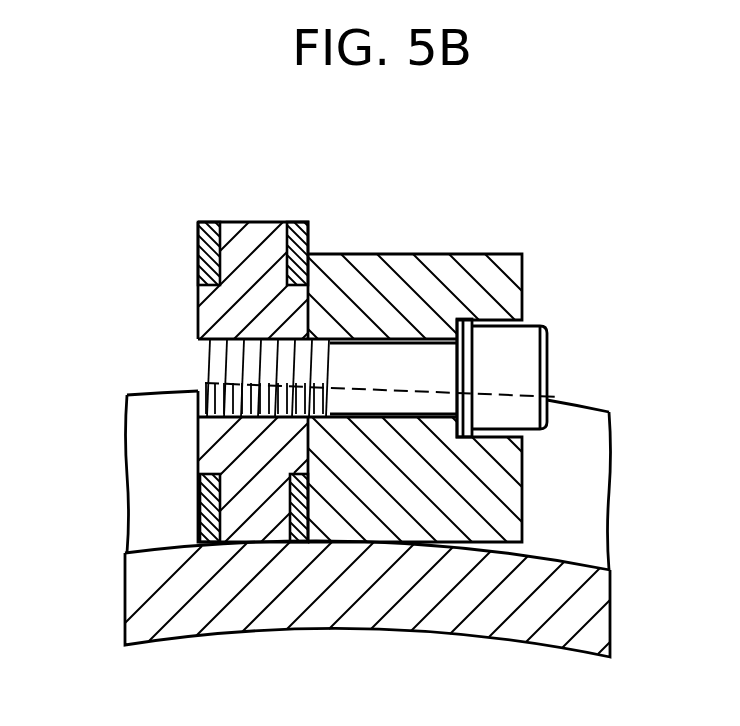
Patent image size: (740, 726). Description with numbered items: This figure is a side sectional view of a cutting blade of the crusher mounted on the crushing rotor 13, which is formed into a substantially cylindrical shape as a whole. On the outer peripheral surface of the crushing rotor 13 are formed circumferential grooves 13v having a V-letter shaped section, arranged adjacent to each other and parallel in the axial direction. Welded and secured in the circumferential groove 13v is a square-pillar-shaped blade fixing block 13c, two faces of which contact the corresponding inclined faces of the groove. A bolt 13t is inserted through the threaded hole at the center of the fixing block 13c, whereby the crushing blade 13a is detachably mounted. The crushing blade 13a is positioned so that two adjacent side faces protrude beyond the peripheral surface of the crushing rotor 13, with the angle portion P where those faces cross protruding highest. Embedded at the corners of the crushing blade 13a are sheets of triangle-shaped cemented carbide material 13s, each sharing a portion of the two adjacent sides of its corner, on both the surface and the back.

The crushing rotor 13 is at (307, 618).
The crushing blade 13a is at (230, 298).
The cemented carbide material 13s is at (297, 222).
The blade fixing block 13c is at (492, 267).
The bolt 13t is at (400, 362).
The circumferential groove 13v is at (583, 485).
The angle portion P is at (253, 221).